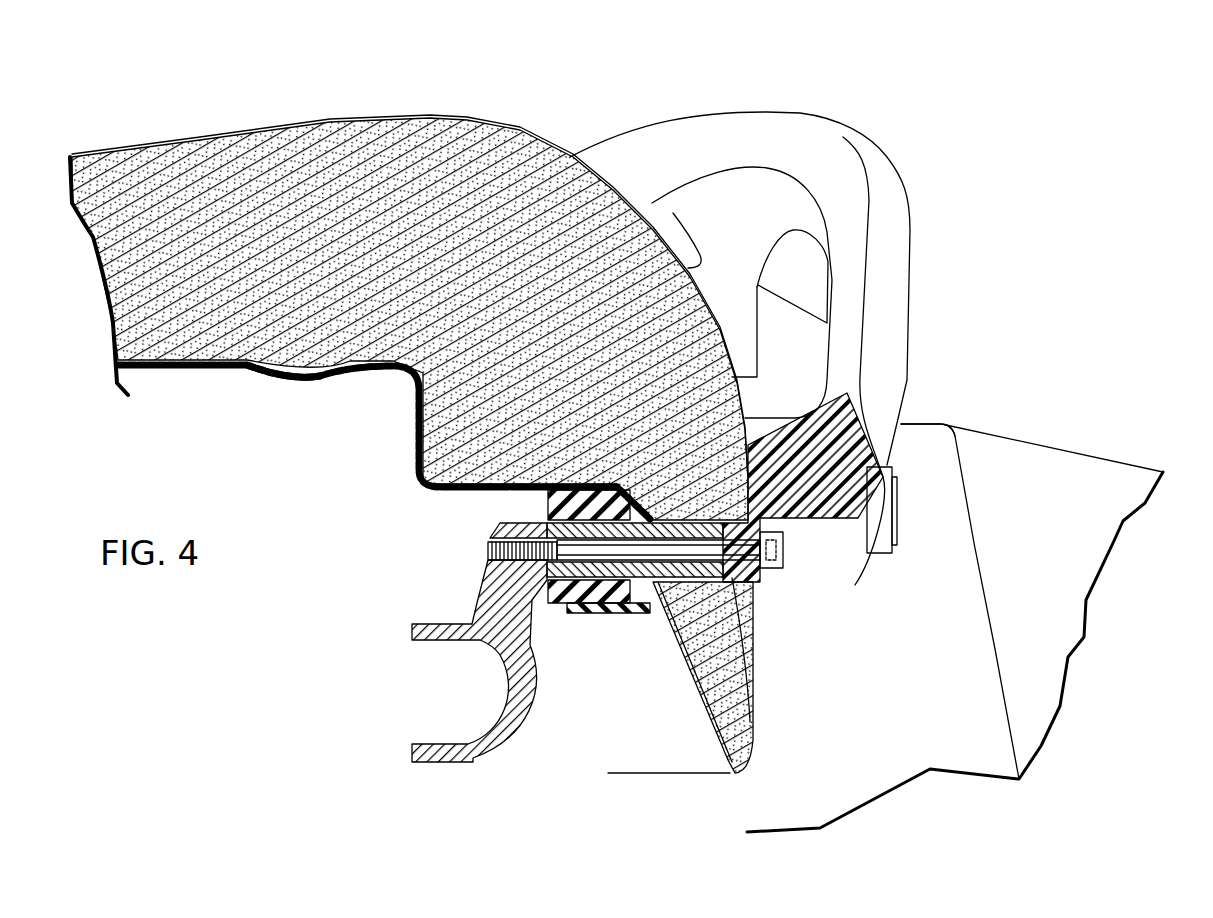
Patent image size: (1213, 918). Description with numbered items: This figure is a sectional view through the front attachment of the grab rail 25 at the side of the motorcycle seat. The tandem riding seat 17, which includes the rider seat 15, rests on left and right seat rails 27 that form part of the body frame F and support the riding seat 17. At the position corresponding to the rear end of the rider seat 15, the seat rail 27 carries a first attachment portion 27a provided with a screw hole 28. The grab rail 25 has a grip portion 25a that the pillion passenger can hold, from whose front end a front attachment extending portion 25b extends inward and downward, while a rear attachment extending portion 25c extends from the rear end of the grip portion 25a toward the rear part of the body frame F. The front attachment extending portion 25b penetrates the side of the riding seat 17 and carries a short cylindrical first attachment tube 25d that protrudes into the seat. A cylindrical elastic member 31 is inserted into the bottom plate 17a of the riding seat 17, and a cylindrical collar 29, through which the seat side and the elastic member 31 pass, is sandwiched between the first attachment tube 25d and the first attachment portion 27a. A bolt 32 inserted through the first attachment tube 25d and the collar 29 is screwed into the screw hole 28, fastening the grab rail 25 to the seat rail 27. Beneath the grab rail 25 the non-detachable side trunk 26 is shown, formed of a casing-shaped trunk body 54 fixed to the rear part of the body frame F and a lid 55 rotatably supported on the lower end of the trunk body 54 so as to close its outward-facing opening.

The rider seat 15 is at (357, 143).
The riding seat 17 is at (225, 140).
The bottom plate 17a is at (268, 368).
The grab rail 25 is at (865, 140).
The grip portion 25a is at (905, 203).
The front attachment extending portion 25b is at (837, 565).
The rear attachment extending portion 25c is at (745, 355).
The first attachment tube 25d is at (751, 665).
The side trunk 26 is at (1045, 446).
The seat rail 27 is at (520, 695).
The first attachment portion 27a is at (507, 534).
The screw hole 28 is at (508, 550).
The collar 29 is at (672, 657).
The elastic member 31 is at (557, 605).
The bolt 32 is at (777, 550).
The trunk body 54 is at (934, 437).
The lid 55 is at (1104, 468).
The body frame F is at (508, 733).